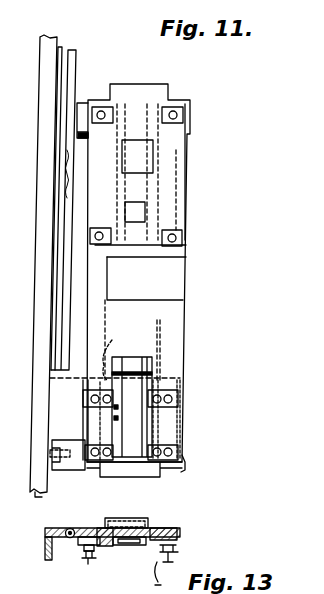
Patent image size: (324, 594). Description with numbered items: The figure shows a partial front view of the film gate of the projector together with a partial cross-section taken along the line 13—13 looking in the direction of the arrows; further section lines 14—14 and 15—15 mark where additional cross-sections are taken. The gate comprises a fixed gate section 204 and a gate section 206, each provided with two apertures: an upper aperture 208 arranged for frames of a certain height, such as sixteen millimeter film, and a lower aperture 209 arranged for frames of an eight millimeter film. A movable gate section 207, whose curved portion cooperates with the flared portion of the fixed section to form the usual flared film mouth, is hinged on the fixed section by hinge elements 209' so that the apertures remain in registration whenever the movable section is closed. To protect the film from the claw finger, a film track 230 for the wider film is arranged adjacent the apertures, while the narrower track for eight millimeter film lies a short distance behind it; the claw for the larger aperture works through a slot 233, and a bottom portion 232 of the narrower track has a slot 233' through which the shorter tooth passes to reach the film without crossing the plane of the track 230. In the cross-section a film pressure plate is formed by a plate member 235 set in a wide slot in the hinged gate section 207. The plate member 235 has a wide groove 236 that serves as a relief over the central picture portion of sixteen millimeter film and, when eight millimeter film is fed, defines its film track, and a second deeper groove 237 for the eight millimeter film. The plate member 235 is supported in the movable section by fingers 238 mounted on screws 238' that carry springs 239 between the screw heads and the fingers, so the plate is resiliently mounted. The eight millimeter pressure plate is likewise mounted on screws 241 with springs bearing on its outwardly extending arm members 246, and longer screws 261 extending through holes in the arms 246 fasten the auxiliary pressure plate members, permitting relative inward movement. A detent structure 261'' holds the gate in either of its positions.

In FIG. 11, the section line 13— 13 is at (53, 147).
In FIG. 11, the section line 14— 14 is at (47, 312).
In FIG. 11, the section line 15— 15 is at (30, 407).
In FIG. 13, the fixed gate section 204 is at (180, 531).
In FIG. 11, the gate section 206 is at (177, 280).
In FIG. 13, the gate section 206 is at (182, 538).
In FIG. 11, the movable gate section 207 is at (177, 218).
In FIG. 11, the aperture 208 is at (148, 151).
In FIG. 13, the aperture 208 is at (113, 547).
In FIG. 11, the lower aperture 209 is at (172, 200).
In FIG. 11, the hinge elements 209' is at (88, 279).
In FIG. 13, the hinge elements 209' is at (72, 522).
In FIG. 13, the film track 230 is at (182, 527).
In FIG. 13, the bottom portion of the track 232 is at (128, 518).
In FIG. 11, the slot 233 is at (165, 380).
In FIG. 11, the slot 233' is at (121, 356).
In FIG. 13, the plate member 235 is at (169, 576).
In FIG. 13, the wide groove 236 is at (155, 527).
In FIG. 13, the deeper groove 237 is at (122, 545).
In FIG. 11, the fingers 238 is at (163, 174).
In FIG. 13, the fingers 238 is at (148, 565).
In FIG. 13, the screws 238' is at (200, 561).
In FIG. 13, the springs 239 is at (84, 556).
In FIG. 11, the screws 241 is at (95, 404).
In FIG. 11, the outwardly extending arm members 246 is at (180, 402).
In FIG. 11, the screws 261 is at (112, 407).
In FIG. 11, the detent structure 261'' is at (31, 180).